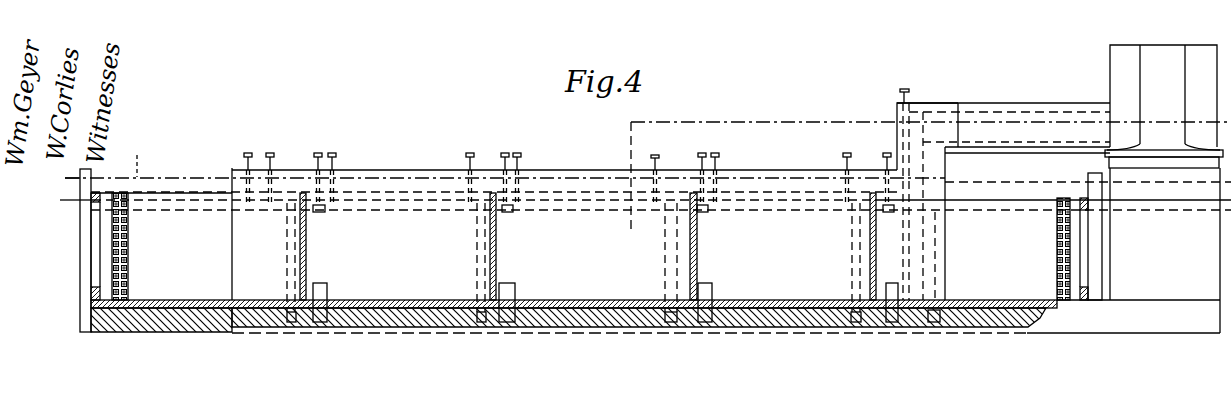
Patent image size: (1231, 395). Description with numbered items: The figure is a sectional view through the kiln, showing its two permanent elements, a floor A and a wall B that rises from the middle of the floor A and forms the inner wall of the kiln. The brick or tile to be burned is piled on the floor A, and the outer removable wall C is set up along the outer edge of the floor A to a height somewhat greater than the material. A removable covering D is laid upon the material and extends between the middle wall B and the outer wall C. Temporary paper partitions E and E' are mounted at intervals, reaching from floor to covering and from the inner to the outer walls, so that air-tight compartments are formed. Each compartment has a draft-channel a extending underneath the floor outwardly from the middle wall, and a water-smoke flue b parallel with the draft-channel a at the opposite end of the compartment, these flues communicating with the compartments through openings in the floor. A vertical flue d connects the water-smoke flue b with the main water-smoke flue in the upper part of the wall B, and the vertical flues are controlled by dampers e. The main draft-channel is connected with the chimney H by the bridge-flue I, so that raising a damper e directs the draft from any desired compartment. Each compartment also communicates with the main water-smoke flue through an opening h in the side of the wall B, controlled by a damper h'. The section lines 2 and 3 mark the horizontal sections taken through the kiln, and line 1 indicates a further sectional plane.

The section line 1 1 is at (681, 143).
The section line 2 2 is at (612, 180).
The section line 3 3 is at (637, 204).
The floor A is at (1000, 289).
The wall B is at (562, 170).
The outer removable wall C is at (128, 252).
The removable covering D is at (166, 192).
The temporary paper partition E is at (596, 246).
The partition E' is at (705, 246).
The chimney H is at (1125, 175).
The bridge-flue I is at (997, 103).
The draft-channel a is at (320, 322).
The water-smoke flue b is at (291, 322).
The vertical flue d is at (287, 260).
The damper e is at (1005, 190).
The opening h is at (607, 223).
The damper h' is at (545, 185).